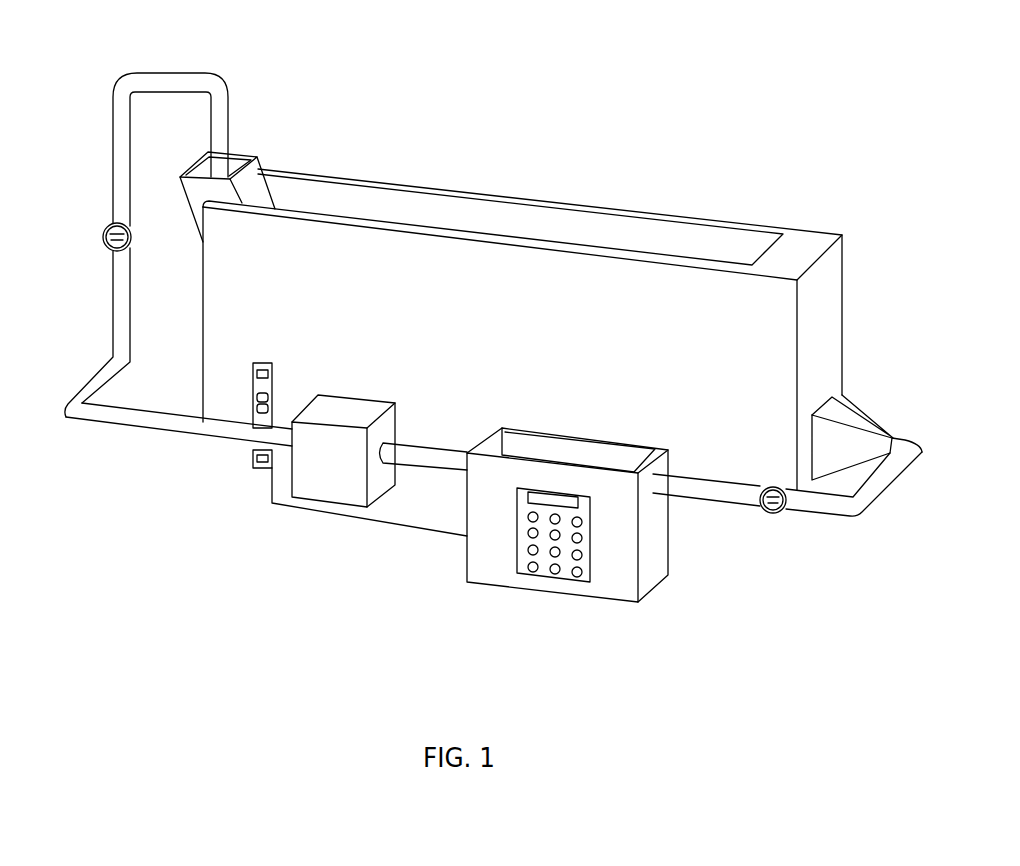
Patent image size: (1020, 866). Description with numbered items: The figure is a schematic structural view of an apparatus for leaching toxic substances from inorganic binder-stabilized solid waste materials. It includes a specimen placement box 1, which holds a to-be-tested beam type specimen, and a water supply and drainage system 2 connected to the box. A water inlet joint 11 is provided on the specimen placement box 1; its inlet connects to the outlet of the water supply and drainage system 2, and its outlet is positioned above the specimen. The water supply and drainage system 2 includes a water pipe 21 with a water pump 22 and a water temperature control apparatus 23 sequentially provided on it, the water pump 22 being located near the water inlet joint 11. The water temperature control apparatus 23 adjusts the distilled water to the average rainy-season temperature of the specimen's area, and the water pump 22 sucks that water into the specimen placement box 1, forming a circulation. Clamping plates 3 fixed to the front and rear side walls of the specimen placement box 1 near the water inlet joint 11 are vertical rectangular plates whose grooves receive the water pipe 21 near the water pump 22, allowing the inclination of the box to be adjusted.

The specimen placement box 1 is at (430, 265).
The water inlet joint 11 is at (243, 185).
The water supply and drainage system 2 is at (157, 87).
The water pipe 21 is at (75, 422).
The water pump 22 is at (323, 493).
The water temperature control apparatus 23 is at (480, 572).
The clamping plate 3 is at (253, 428).